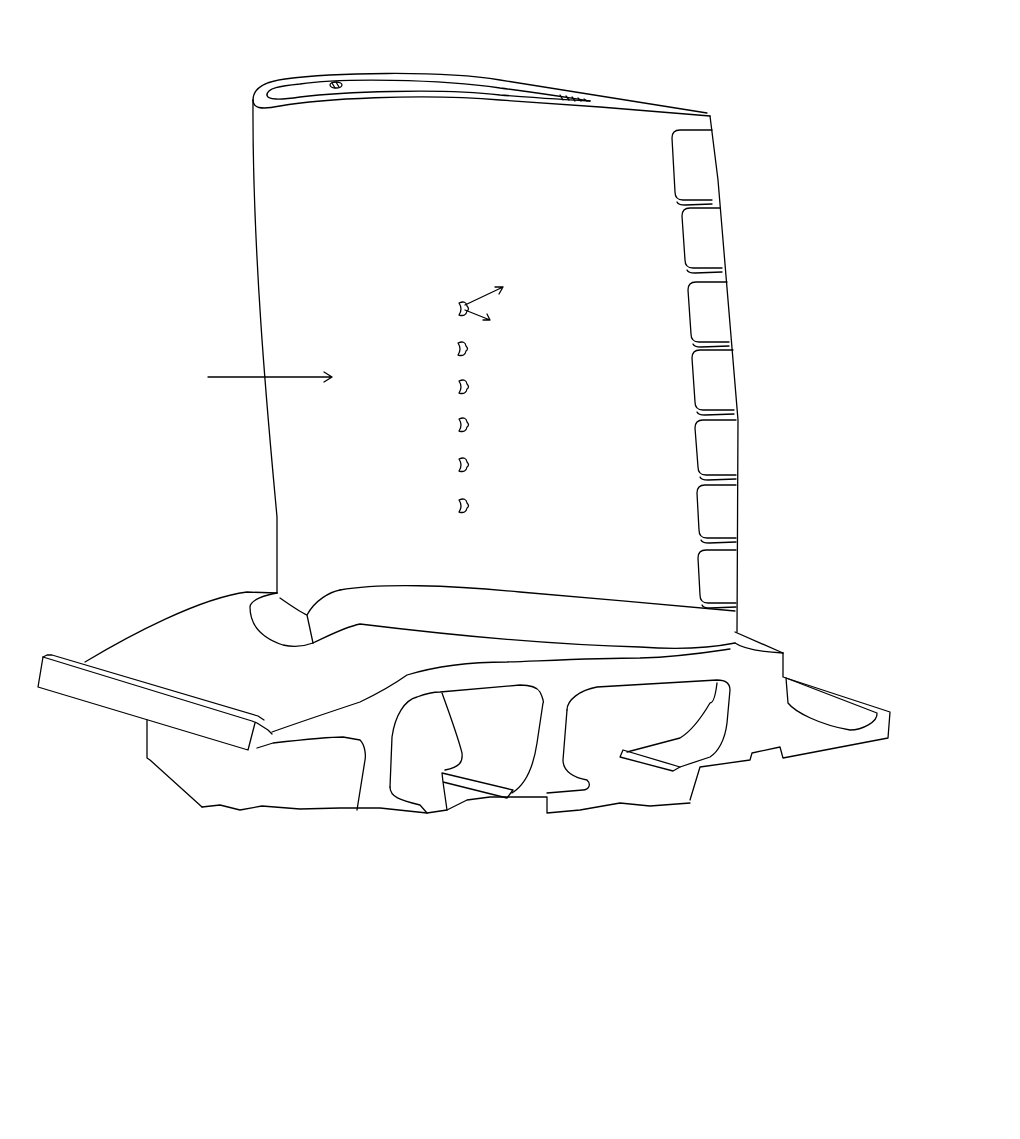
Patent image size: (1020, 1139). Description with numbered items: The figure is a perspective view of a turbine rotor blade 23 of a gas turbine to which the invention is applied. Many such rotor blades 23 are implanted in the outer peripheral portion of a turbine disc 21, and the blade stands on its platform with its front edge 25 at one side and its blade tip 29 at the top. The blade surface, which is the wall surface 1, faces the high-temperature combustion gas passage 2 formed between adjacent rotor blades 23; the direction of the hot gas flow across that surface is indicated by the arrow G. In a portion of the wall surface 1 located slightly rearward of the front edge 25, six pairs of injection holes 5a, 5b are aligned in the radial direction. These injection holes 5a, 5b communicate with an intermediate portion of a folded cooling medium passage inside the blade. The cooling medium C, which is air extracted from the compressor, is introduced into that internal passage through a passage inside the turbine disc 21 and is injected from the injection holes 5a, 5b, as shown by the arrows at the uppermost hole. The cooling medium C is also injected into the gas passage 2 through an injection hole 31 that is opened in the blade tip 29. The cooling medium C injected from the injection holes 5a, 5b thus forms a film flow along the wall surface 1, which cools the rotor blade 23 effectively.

The wall surface 1 is at (265, 172).
The high-temperature gas passage 2 is at (215, 331).
The injection hole 5a is at (460, 302).
The injection hole 5b is at (467, 317).
The turbine disc 21 is at (193, 622).
The rotor blade 23 is at (632, 133).
The front edge 25 is at (256, 278).
The blade tip 29 is at (597, 100).
The injection hole 31 is at (337, 85).
The cooling medium C is at (480, 312).
The hot gas flow G is at (228, 377).